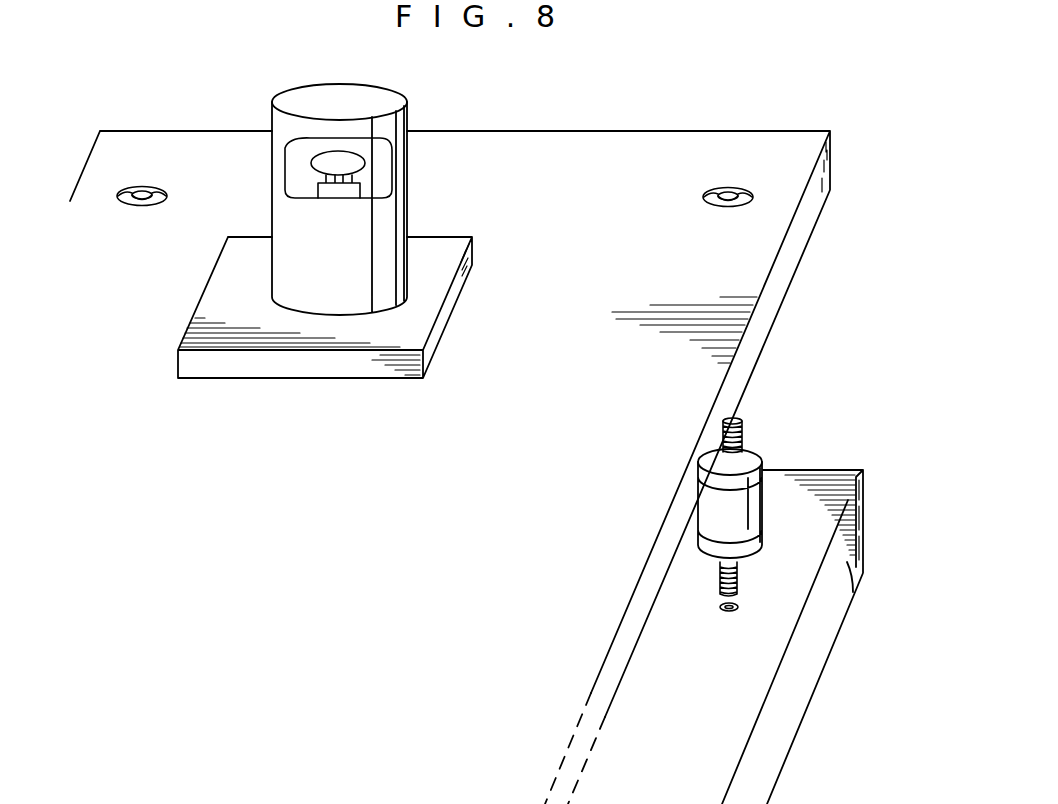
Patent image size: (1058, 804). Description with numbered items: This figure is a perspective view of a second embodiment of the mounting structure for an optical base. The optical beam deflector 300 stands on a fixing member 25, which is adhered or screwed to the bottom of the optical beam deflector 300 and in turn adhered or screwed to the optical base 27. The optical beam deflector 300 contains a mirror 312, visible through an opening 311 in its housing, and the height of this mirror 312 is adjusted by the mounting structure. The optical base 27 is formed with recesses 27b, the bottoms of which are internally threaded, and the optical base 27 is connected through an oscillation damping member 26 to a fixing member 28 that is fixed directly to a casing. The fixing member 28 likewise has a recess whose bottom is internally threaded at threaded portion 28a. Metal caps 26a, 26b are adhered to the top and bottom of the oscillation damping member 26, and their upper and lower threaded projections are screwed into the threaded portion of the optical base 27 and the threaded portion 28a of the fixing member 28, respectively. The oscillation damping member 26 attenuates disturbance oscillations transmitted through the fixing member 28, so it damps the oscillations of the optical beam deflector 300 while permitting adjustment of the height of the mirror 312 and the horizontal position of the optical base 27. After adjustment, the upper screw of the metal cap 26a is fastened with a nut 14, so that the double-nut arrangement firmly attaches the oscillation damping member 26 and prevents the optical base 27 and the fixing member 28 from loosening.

The nut 14 is at (136, 190).
The fixing member 25 is at (453, 306).
The oscillation damping member 26 is at (756, 517).
The metal cap 26a is at (763, 462).
The metal cap 26b is at (753, 562).
The optical base 27 is at (824, 196).
The recess 27b is at (123, 199).
The fixing member 28 is at (853, 598).
The threaded portion 28a is at (727, 613).
The optical beam deflector 300 is at (433, 118).
The switch window 311 is at (290, 186).
The mirror 312 is at (360, 165).